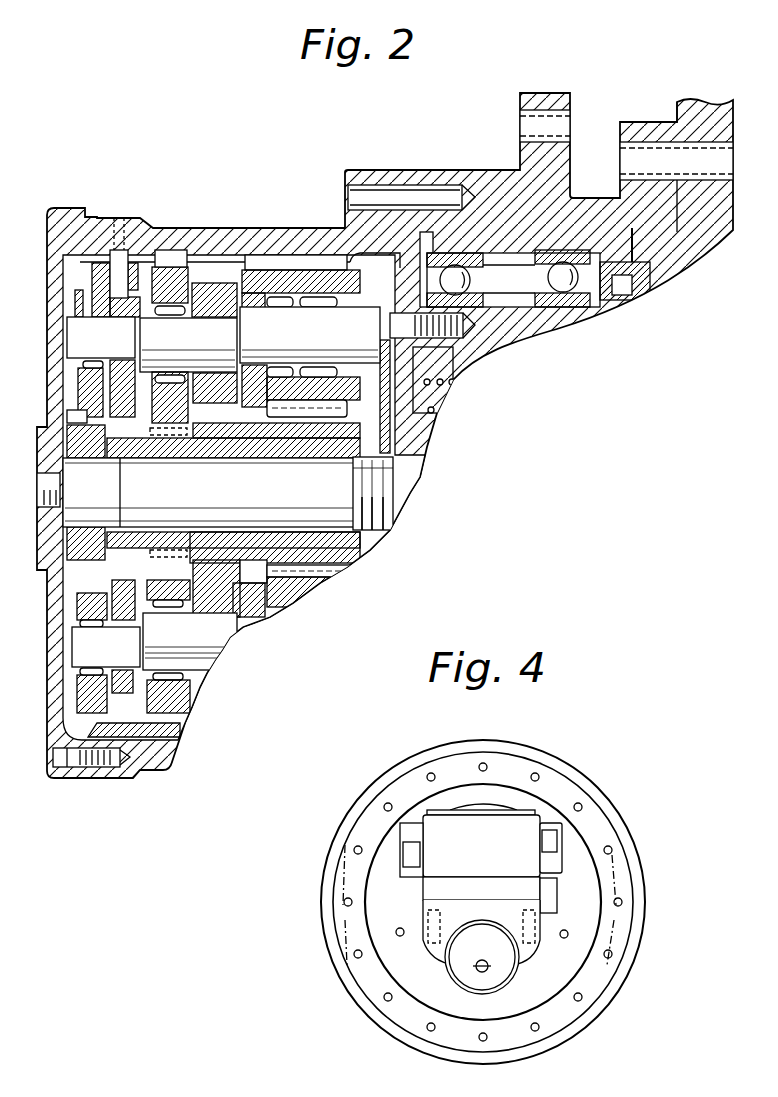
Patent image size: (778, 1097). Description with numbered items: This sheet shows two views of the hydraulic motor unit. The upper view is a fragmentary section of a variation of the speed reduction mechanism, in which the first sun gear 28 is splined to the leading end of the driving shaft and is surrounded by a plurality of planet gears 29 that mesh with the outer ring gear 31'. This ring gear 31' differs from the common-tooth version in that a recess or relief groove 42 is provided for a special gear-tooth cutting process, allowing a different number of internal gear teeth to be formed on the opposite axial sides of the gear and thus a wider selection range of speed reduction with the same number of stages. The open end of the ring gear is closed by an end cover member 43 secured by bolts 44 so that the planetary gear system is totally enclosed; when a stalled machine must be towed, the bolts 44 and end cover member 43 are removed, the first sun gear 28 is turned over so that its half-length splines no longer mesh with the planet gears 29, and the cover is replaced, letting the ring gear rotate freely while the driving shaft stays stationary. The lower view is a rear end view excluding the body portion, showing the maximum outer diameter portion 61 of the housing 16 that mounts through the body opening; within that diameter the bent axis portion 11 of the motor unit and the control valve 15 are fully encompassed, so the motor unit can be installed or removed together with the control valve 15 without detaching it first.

In FIG. 2, the recess or relief groove 42 is at (121, 255).
In FIG. 2, the ring gear 31' is at (385, 435).
In FIG. 2, the planet gears 29 is at (95, 390).
In FIG. 2, the first sun gear 28 is at (97, 543).
In FIG. 2, the end cover member 43 is at (43, 540).
In FIG. 2, the bolts 44 is at (70, 777).
In FIG. 4, the maximum outer diameter portion of the housing 61 is at (503, 783).
In FIG. 4, the control valve 15 is at (520, 827).
In FIG. 4, the bent axis portion 11 is at (548, 942).
In FIG. 4, the housing 16 is at (593, 980).